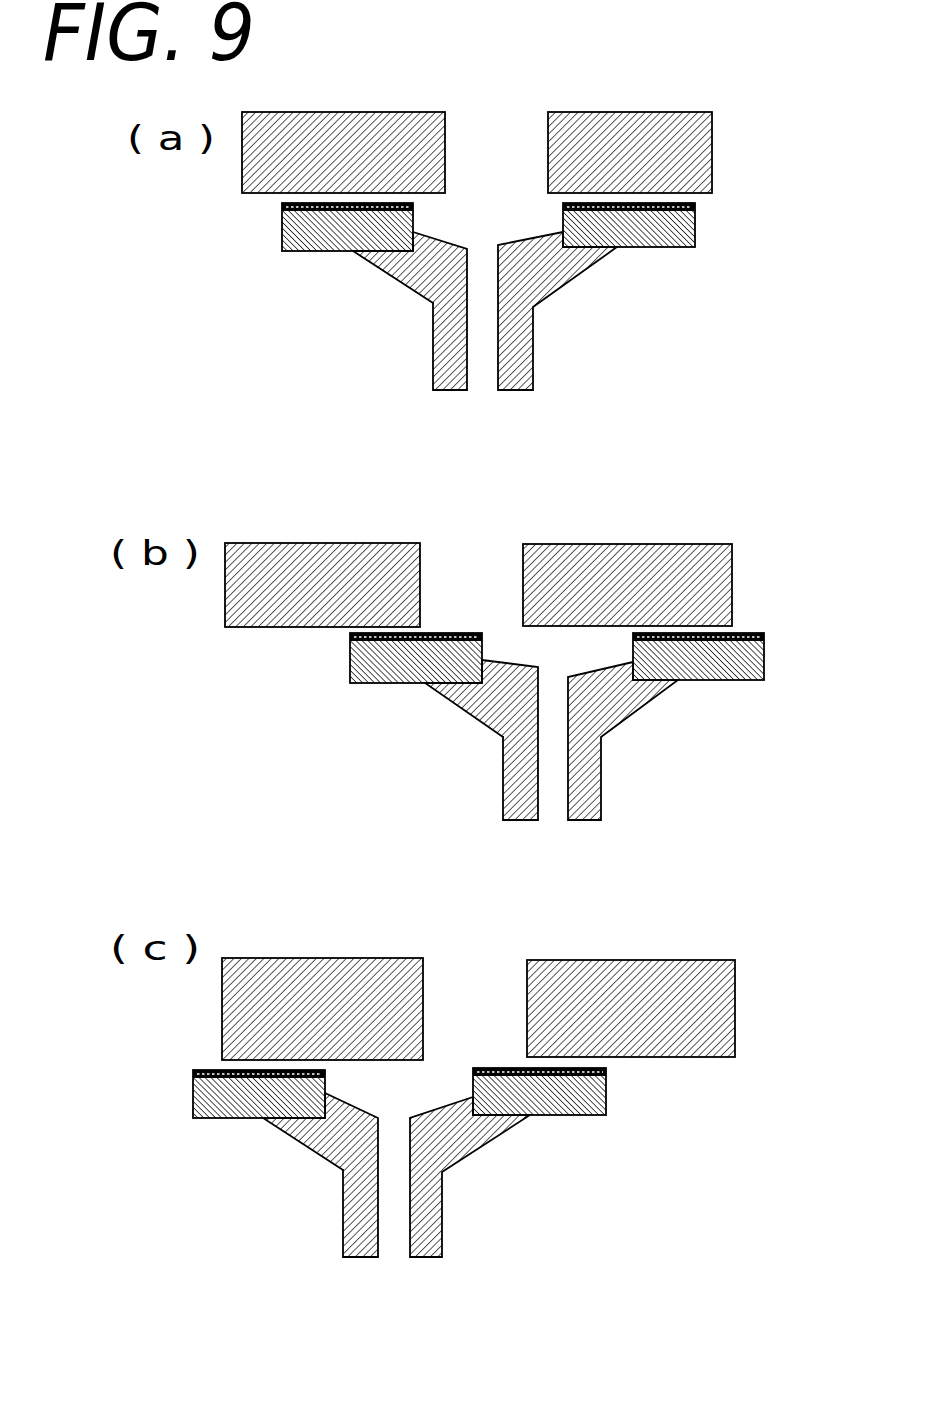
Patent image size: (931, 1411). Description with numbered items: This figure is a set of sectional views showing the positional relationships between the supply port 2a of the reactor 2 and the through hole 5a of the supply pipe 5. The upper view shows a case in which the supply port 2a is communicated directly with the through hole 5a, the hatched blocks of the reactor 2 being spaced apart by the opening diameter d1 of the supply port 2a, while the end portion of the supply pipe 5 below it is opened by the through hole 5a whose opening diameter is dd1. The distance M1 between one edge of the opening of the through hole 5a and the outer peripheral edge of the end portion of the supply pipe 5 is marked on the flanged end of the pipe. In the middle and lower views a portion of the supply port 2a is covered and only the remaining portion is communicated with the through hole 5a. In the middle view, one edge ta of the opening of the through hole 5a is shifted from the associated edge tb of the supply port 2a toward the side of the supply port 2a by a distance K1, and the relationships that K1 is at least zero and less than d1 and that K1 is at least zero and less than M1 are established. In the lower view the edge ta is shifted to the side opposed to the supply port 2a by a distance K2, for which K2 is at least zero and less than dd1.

The reactor 2 is at (655, 140).
The supply port 2a is at (518, 116).
The supply pipe 5 is at (695, 227).
The through hole 5a is at (462, 236).
The distance between one edge of the through hole opening and the outer peripheral e M1 is at (478, 660).
The opening diameter of the supply port d1 is at (548, 173).
The opening diameter of the through hole dd1 is at (563, 217).
The shift distance toward the supply port K1 is at (482, 660).
The shift distance away from the supply port K2 is at (422, 1055).
The one edge of the opening of the through hole ta is at (488, 637).
The one edge of the supply port tb is at (412, 621).